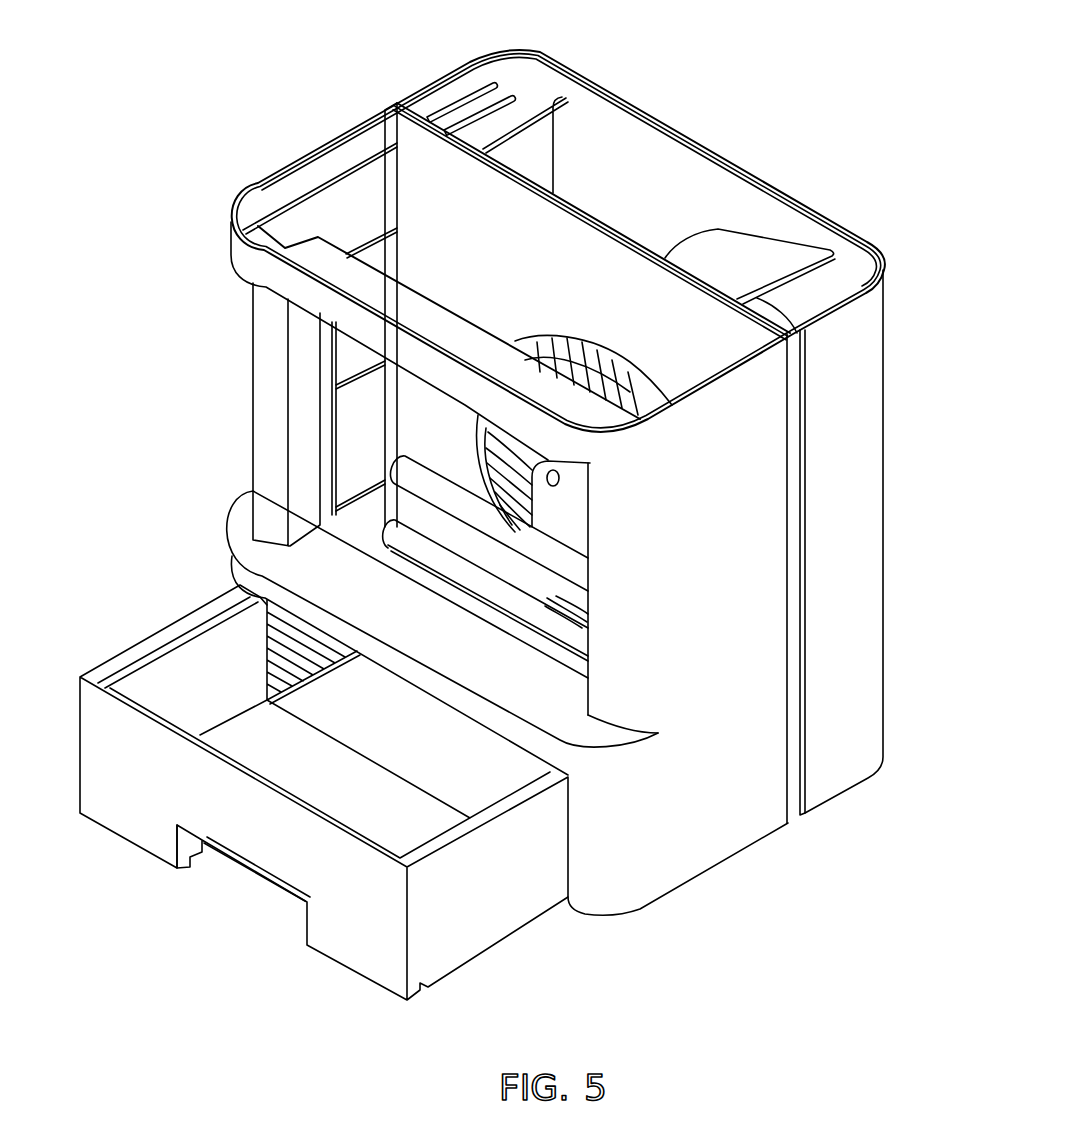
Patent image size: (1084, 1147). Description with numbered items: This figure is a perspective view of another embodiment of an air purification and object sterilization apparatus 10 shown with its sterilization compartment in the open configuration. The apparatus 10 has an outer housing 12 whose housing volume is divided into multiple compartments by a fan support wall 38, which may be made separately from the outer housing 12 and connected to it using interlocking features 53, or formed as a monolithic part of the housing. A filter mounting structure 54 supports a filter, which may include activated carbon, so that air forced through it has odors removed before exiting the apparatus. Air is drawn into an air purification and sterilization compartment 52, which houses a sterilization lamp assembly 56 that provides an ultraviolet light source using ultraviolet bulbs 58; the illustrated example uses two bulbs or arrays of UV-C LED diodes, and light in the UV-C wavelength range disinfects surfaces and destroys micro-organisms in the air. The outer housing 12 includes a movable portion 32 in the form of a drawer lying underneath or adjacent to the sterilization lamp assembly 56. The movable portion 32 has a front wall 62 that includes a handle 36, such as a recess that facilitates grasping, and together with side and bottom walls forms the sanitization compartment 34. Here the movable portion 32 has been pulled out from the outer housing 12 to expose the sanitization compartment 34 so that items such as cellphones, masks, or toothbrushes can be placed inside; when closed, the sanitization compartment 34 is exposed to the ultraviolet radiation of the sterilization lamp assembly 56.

The air purification and object sterilization apparatus 10 is at (749, 99).
The outer housing 12 is at (900, 427).
The movable portion 32 is at (327, 972).
The sanitization compartment 34 is at (113, 853).
The handle 36 is at (227, 873).
The fan support wall 38 is at (463, 212).
The air purification and sterilization compartment 52 is at (333, 186).
The interlocking features 53 is at (392, 104).
The filter mounting structure 54 is at (552, 96).
The sterilization lamp assembly 56 is at (596, 576).
The ultraviolet bulbs 58 is at (585, 610).
The front wall 62 is at (297, 865).